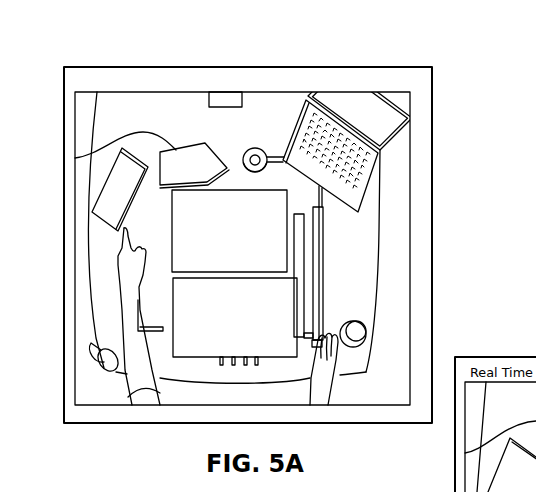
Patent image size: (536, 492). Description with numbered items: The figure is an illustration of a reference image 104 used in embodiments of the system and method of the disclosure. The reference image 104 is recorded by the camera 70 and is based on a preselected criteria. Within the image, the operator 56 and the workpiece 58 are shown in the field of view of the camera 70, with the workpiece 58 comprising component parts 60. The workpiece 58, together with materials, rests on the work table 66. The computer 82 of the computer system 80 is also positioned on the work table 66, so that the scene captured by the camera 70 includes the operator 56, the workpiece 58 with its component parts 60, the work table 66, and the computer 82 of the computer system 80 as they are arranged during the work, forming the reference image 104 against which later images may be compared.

The operator 56 is at (120, 381).
The workpiece 58 is at (298, 242).
The component parts 60 is at (241, 242).
The work table 66 is at (105, 117).
The camera 70 is at (250, 97).
The computer system 80 is at (410, 154).
The computer 82 is at (365, 184).
The reference image 104 is at (344, 62).